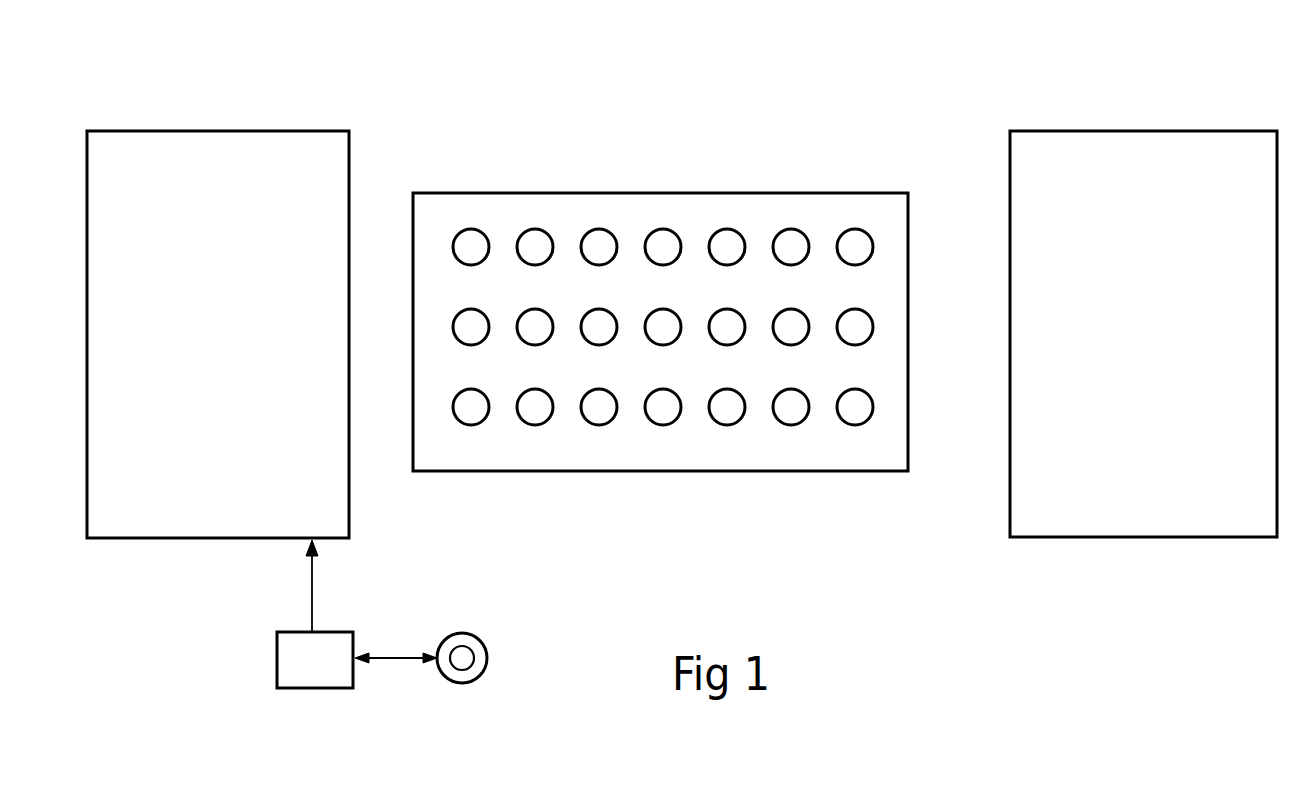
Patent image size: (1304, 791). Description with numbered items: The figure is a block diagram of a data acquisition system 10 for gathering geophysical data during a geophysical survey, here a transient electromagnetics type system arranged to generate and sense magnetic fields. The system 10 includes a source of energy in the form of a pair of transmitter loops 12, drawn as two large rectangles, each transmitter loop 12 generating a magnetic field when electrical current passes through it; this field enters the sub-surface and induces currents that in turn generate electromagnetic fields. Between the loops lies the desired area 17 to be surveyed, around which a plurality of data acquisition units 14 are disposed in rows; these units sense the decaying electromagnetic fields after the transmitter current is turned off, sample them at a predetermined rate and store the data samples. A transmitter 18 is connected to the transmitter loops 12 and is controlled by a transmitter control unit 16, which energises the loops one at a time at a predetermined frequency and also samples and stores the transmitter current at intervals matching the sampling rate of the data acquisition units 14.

The data acquisition system 10 is at (683, 137).
The transmitter loop 12 is at (253, 130).
The data acquisition unit 14 is at (473, 229).
The transmitter control unit 16 is at (482, 642).
The desired area 17 is at (815, 193).
The transmitter 18 is at (332, 632).